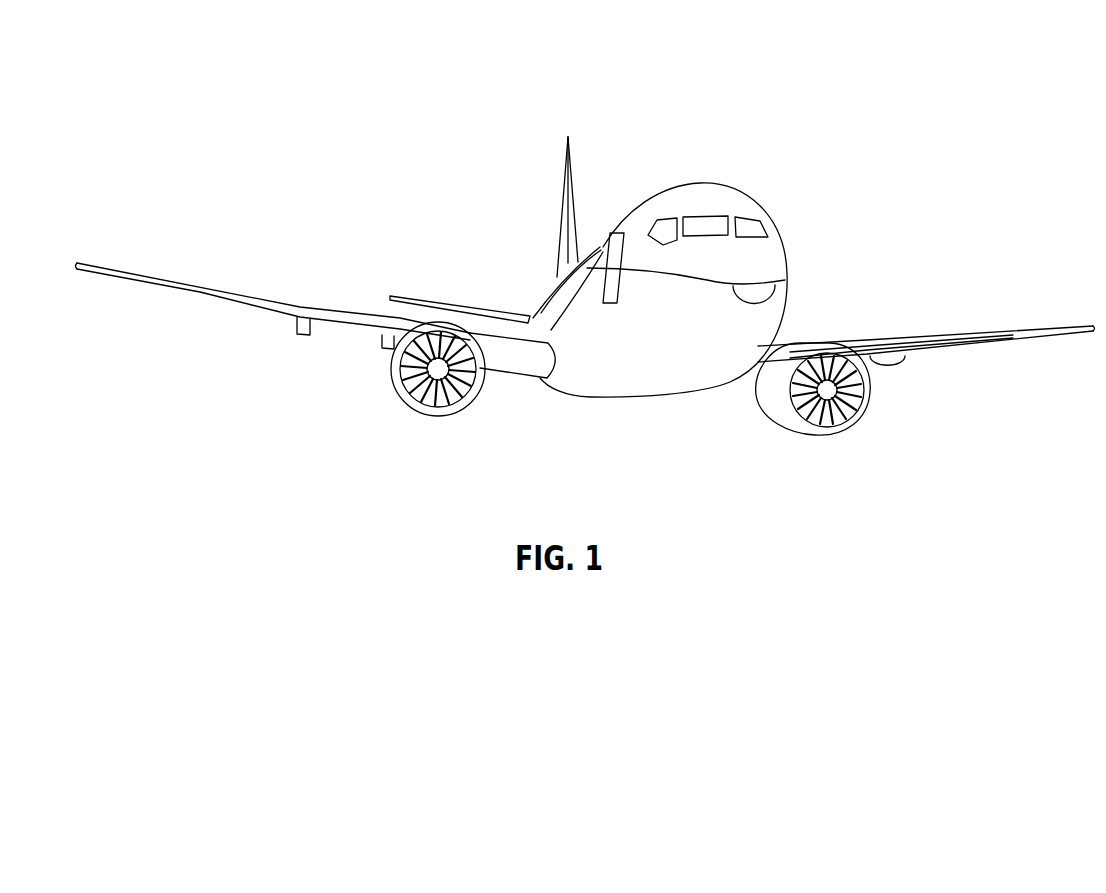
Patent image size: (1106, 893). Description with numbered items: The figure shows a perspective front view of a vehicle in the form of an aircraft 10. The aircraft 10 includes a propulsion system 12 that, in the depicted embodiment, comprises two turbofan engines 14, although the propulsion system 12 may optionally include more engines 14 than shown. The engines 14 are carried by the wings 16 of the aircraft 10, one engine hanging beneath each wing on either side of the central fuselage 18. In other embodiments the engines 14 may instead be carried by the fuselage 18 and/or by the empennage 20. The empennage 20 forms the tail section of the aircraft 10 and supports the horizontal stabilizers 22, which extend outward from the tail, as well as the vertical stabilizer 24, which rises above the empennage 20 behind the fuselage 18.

The aircraft 10 is at (330, 83).
The propulsion system 12 is at (917, 429).
The turbofan engines 14 is at (432, 416).
The wings 16 is at (215, 290).
The fuselage 18 is at (788, 249).
The empennage 20 is at (556, 277).
The horizontal stabilizers 22 is at (428, 298).
The vertical stabilizer 24 is at (565, 175).